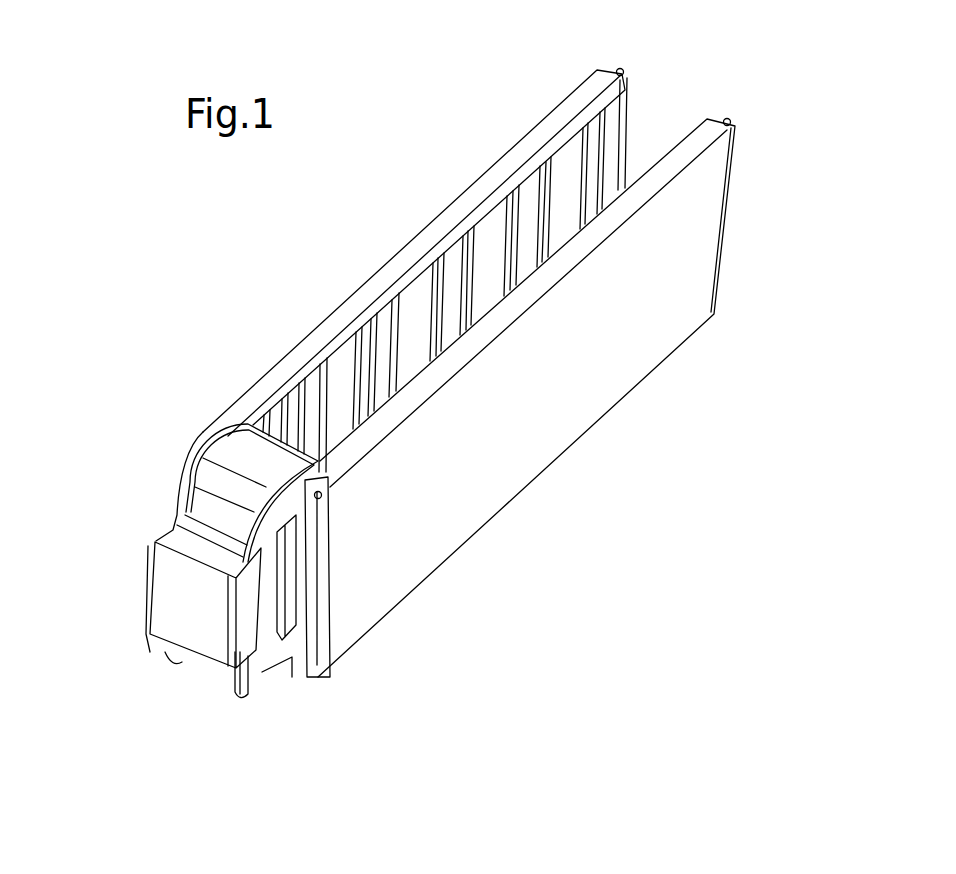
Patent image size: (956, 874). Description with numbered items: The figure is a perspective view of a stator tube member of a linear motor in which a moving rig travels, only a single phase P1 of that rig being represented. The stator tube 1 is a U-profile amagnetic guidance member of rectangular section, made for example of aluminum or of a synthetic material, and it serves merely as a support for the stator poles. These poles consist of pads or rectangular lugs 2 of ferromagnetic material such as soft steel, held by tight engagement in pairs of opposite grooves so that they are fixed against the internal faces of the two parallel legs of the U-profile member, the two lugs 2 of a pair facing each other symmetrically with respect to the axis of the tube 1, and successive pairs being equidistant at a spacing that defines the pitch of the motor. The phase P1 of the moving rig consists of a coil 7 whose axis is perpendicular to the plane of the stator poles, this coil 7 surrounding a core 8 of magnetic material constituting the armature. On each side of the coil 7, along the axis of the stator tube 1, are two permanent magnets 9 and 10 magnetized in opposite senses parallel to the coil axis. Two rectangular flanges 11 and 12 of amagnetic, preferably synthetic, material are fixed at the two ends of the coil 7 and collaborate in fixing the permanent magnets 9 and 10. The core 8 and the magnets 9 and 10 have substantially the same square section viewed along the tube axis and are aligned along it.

The stator tube 1 is at (698, 142).
The rectangular lugs 2 is at (610, 135).
The coil 7 is at (242, 470).
The core 8 is at (284, 660).
The permanent magnet 9 is at (268, 447).
The permanent magnet 10 is at (160, 640).
The rectangular flange 11 is at (176, 500).
The rectangular flange 12 is at (247, 697).
The phase P1 is at (156, 518).